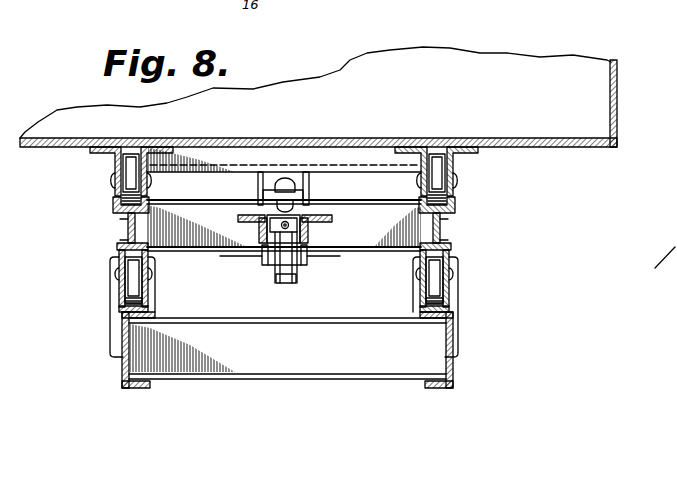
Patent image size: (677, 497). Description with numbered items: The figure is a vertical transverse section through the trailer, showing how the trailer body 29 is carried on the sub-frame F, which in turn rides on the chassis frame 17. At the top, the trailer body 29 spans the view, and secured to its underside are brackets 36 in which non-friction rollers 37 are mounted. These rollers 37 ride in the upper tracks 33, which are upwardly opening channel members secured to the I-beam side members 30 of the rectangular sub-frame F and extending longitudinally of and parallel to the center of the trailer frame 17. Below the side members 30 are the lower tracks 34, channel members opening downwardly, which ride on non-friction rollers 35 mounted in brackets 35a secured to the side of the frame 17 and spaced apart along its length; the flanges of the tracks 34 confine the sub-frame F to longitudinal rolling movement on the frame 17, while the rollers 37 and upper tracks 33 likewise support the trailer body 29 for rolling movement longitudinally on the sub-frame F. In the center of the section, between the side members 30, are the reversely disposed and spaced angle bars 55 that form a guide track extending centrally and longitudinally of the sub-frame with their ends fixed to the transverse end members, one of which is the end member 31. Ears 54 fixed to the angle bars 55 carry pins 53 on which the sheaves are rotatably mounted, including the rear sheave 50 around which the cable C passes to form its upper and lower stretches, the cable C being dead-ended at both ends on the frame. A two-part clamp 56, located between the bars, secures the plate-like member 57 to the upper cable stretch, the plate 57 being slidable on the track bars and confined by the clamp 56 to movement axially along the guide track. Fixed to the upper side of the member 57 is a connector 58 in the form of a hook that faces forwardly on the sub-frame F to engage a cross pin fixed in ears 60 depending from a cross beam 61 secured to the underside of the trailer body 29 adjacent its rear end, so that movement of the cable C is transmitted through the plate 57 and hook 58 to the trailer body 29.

The frame 17 is at (122, 368).
The trailer body 29 is at (617, 97).
The side members 30 is at (128, 229).
The end member 31 is at (208, 237).
The upper tracks 33 is at (115, 203).
The lower tracks 34 is at (118, 250).
The non-friction rollers 35 is at (123, 292).
The brackets 35a is at (113, 316).
The brackets 36 is at (115, 159).
The non-friction rollers 37 is at (130, 177).
The rear sheave 50 is at (293, 283).
The pins 53 is at (306, 248).
The ears 54 is at (260, 262).
The angle bars 55 is at (311, 238).
The two-part clamp 56 is at (308, 226).
The plate-like member 57 is at (333, 218).
The connector 58 is at (283, 182).
The ears 60 is at (310, 190).
The cross beam 61 is at (377, 160).
The sub-frame F is at (448, 220).
The cable C is at (288, 283).